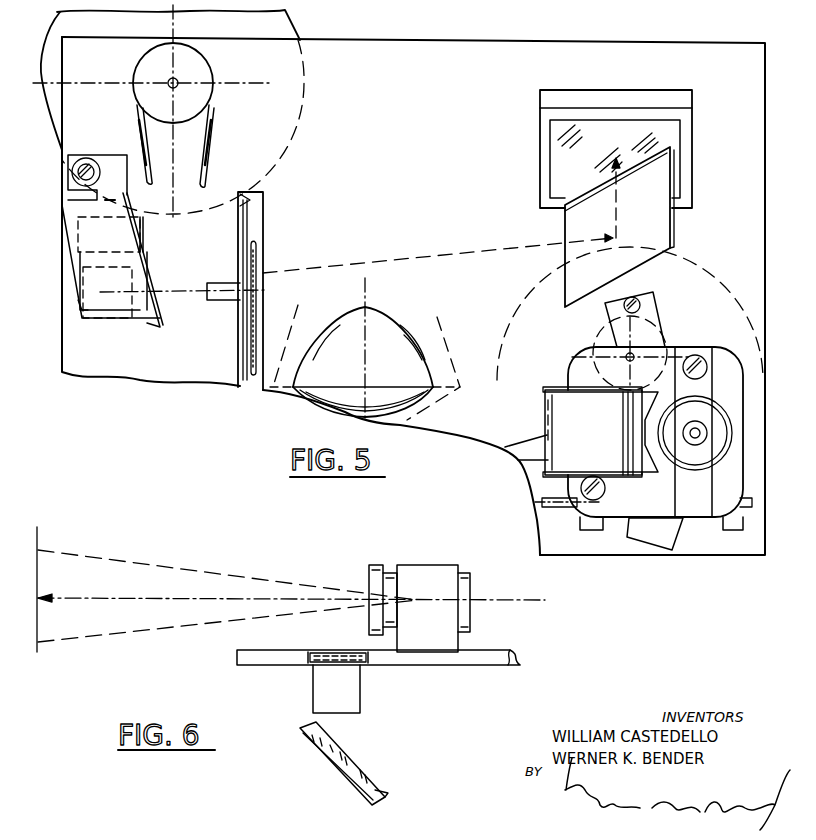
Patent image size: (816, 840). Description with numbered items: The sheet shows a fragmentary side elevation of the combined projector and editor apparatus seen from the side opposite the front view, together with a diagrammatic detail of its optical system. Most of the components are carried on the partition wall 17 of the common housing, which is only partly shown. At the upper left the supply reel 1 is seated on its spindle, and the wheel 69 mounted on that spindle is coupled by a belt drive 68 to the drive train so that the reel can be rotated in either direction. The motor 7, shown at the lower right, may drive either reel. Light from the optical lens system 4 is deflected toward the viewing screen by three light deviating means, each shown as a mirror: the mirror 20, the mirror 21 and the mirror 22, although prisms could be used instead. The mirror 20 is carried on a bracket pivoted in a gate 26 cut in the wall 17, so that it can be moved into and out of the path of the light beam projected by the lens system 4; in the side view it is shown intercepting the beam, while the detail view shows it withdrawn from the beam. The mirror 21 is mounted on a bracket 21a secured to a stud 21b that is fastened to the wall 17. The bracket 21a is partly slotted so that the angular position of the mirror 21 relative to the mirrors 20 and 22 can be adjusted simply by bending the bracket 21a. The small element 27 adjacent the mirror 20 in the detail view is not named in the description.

In FIG. 5, the supply reel 1 is at (283, 25).
In FIG. 5, the partition wall 17 is at (463, 45).
In FIG. 6, the partition wall 17 is at (490, 658).
In FIG. 5, the wheel 69 is at (195, 72).
In FIG. 5, the belt drive 68 is at (208, 148).
In FIG. 5, the stud 21b is at (68, 180).
In FIG. 5, the bracket 21a is at (72, 212).
In FIG. 5, the gate 26 is at (143, 230).
In FIG. 5, the light deviating means (mirror) 21 is at (150, 270).
In FIG. 6, the light deviating means (mirror) 21 is at (360, 770).
In FIG. 5, the light deviating means (mirror) 20 is at (97, 273).
In FIG. 6, the light deviating means (mirror) 20 is at (350, 693).
In FIG. 5, the light deviating means (mirror) 22 is at (665, 218).
In FIG. 5, the motor 7 is at (735, 368).
In FIG. 6, the optical lens system 4 is at (433, 558).
In FIG. 6, the slider pin 27 is at (306, 660).